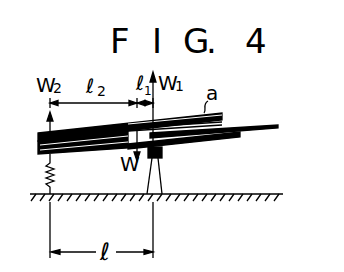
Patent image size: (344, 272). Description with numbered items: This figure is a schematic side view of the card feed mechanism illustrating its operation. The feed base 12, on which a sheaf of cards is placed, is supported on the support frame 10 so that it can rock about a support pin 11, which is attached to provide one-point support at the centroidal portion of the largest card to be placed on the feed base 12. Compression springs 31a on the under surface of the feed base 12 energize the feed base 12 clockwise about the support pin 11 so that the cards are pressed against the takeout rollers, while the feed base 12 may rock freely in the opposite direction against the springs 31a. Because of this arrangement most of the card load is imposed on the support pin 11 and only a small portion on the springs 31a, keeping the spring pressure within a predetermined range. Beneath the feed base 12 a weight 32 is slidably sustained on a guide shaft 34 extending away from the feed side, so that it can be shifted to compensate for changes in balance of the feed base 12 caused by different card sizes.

The support frame 10 is at (272, 195).
The support pin 11 is at (160, 170).
The feed base 12 is at (255, 124).
The compression springs 31a is at (48, 173).
The weight 32 is at (162, 151).
The guide shaft 34 is at (229, 140).